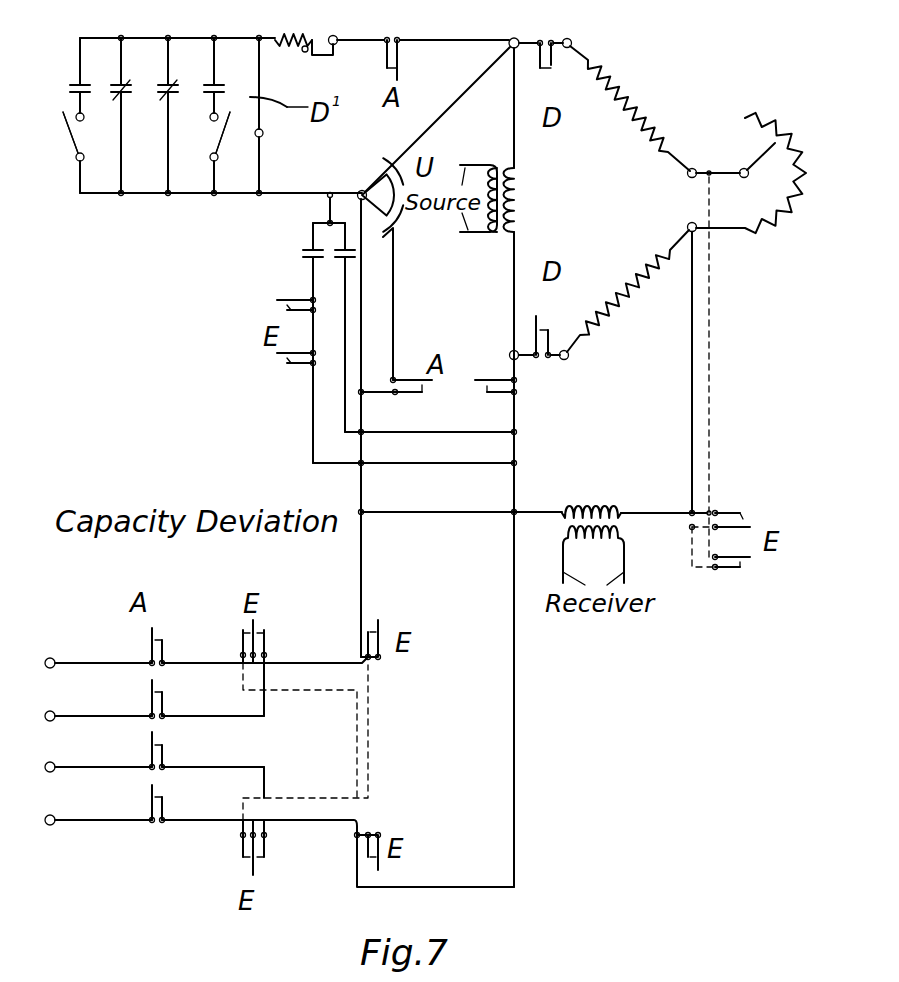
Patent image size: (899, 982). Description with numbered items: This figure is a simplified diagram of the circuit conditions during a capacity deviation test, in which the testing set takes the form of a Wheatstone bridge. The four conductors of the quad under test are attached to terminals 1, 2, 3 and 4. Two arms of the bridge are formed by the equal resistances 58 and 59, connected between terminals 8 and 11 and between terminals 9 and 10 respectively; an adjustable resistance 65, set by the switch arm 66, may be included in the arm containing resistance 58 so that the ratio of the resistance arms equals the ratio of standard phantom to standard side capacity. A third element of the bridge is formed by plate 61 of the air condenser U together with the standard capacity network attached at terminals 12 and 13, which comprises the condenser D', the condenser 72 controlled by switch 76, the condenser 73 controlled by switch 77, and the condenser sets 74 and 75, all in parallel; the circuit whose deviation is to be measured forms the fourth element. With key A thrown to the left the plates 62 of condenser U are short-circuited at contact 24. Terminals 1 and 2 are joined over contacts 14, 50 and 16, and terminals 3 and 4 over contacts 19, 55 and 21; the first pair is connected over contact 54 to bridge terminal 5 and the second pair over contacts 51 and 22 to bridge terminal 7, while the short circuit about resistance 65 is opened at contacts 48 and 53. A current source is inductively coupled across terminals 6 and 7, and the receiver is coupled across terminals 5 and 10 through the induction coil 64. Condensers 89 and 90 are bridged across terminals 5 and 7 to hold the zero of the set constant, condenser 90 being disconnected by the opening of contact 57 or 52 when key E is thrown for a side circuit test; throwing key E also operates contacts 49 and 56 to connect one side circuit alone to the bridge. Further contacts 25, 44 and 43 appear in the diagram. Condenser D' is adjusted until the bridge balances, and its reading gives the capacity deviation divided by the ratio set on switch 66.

The terminal 1 is at (88, 664).
The terminal 2 is at (87, 717).
The terminal 3 is at (87, 768).
The terminal 4 is at (87, 821).
The bridge terminal 5 is at (358, 413).
The bridge terminal 6 is at (442, 102).
The bridge terminal 7 is at (509, 353).
The terminal 8 is at (570, 39).
The terminal 9 is at (566, 360).
The bridge terminal 10 is at (688, 224).
The terminal 11 is at (711, 177).
The terminal 12 is at (337, 37).
The terminal 13 is at (321, 196).
The contact 14 is at (165, 641).
The contact 16 is at (165, 693).
The contact 19 is at (165, 746).
The contact 21 is at (165, 798).
The contact 22 is at (488, 393).
The contact 24 is at (422, 393).
The contact 25 is at (398, 68).
The contact 43 is at (540, 328).
The contact 44 is at (545, 68).
The contact 48 is at (743, 519).
The contact 49 is at (243, 632).
The contact 50 is at (264, 632).
The contact 51 is at (378, 862).
The contact 52 is at (286, 357).
The contact 53 is at (742, 565).
The contact 54 is at (375, 632).
The contact 55 is at (262, 858).
The contact 56 is at (243, 858).
The contact 57 is at (286, 304).
The resistance 58 is at (640, 110).
The resistance 59 is at (620, 312).
The plate 61 is at (383, 175).
The plate 62 is at (397, 218).
The transformer 64 is at (622, 520).
The adjustable resistance 65 is at (778, 225).
The switch arm 66 is at (762, 152).
The condenser 72 is at (216, 85).
The condenser 73 is at (82, 85).
The condenser set 74 is at (170, 86).
The condenser set 75 is at (124, 86).
The switch 76 is at (219, 148).
The switch 77 is at (68, 138).
The condenser 89 is at (340, 262).
The condenser 90 is at (303, 253).